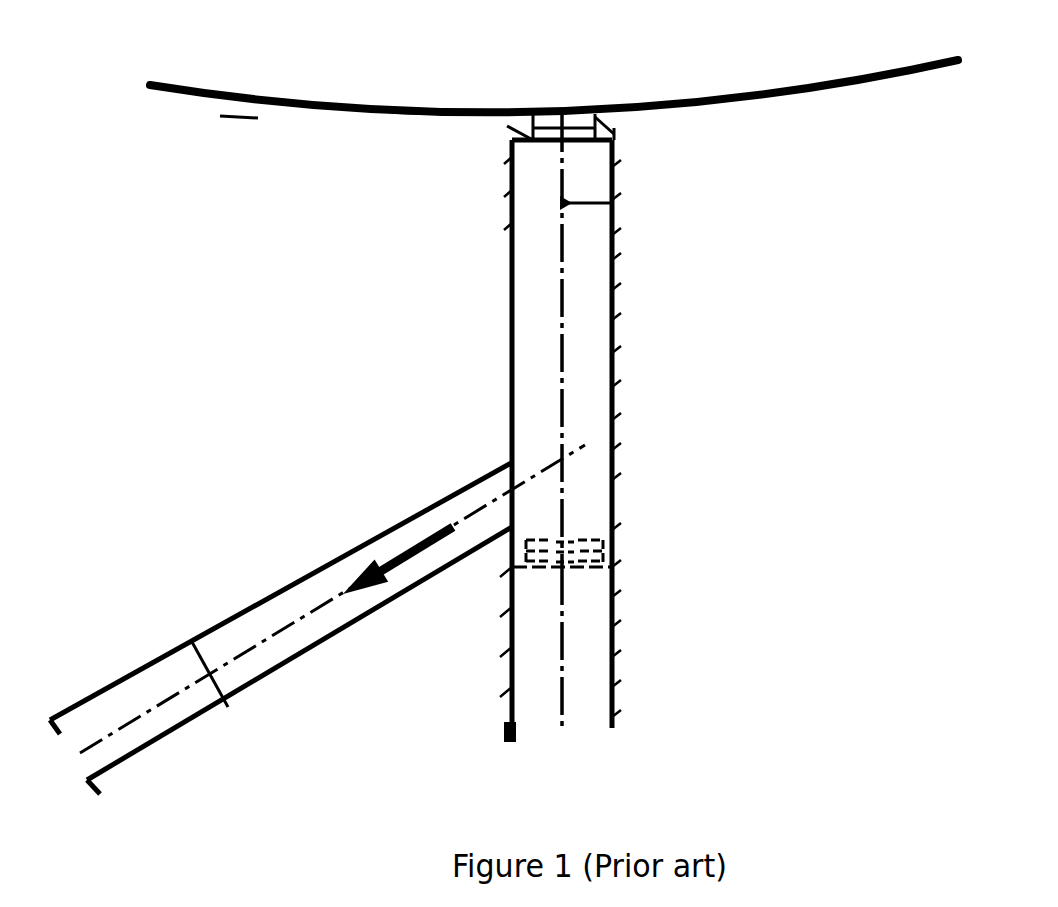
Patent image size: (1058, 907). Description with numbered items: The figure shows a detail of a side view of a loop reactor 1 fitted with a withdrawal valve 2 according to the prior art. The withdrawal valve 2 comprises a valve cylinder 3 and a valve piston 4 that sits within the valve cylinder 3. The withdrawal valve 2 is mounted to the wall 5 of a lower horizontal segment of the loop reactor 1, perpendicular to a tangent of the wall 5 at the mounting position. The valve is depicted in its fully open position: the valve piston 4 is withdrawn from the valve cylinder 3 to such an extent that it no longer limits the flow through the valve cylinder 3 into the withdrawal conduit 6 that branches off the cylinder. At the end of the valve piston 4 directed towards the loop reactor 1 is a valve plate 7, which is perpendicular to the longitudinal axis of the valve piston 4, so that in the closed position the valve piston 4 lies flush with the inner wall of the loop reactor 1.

The loop reactor 1 is at (342, 63).
The withdrawal valve 2 is at (657, 390).
The valve cylinder 3 is at (598, 307).
The valve piston 4 is at (578, 660).
The wall 5 is at (402, 118).
The withdrawal conduit 6 is at (257, 605).
The valve plate 7 is at (565, 540).